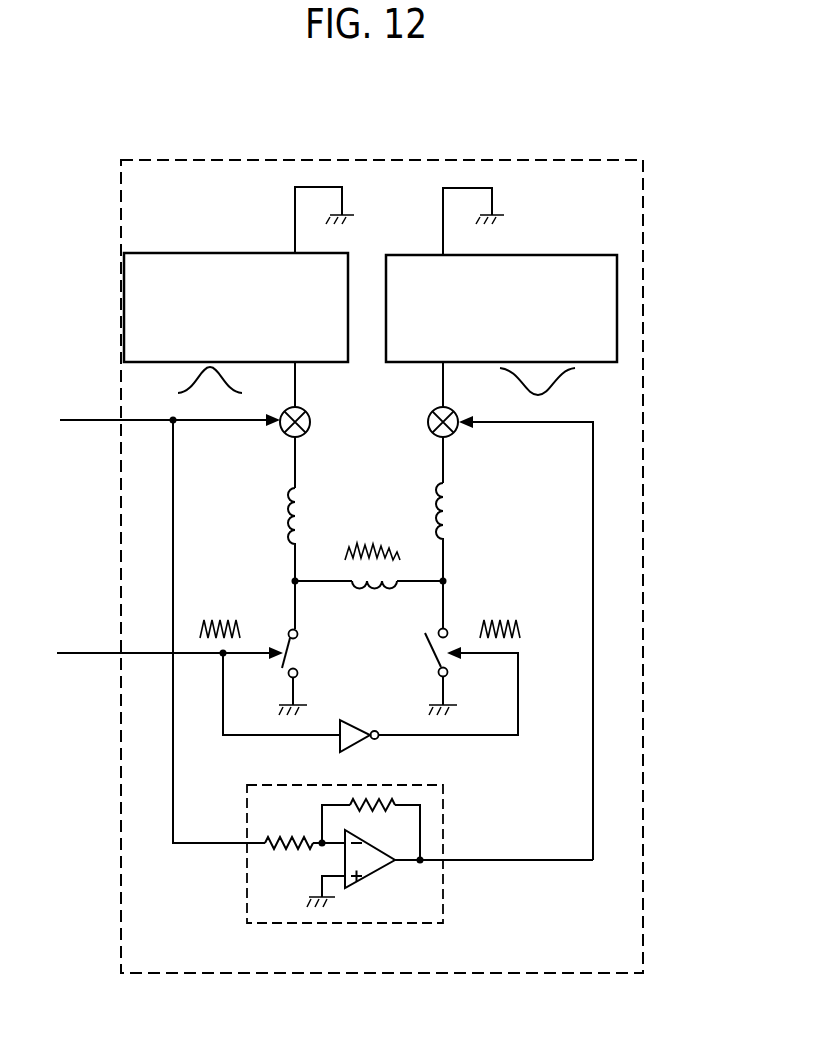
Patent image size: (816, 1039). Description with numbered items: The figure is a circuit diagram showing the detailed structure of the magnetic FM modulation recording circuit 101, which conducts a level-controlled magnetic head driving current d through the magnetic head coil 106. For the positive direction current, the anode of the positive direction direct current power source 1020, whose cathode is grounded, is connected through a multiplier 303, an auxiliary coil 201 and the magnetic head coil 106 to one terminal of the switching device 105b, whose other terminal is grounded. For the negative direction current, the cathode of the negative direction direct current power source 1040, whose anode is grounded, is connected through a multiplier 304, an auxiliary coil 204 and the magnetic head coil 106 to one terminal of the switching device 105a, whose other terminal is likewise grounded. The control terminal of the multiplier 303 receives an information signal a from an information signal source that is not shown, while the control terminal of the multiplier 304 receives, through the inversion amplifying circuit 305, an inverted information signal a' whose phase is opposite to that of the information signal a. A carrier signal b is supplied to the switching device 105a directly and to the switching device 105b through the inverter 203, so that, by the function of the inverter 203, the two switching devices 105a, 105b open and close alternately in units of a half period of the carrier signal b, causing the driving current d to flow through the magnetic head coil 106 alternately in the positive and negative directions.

The magnetic FM modulation recording circuit 101 is at (478, 158).
The positive direction direct current power source 1020 is at (208, 252).
The negative direction direct current power source 1040 is at (398, 255).
The multiplier 303 is at (312, 418).
The multiplier 304 is at (427, 428).
The auxiliary coil 201 is at (290, 518).
The auxiliary coil 204 is at (452, 505).
The magnetic head coil 106 is at (364, 586).
The switching device 105a is at (289, 632).
The switching device 105b is at (451, 648).
The inverter 203 is at (355, 720).
The inversion amplifying circuit 305 is at (443, 820).
The information signal a is at (170, 385).
The inverted information signal a' is at (573, 638).
The carrier signal b is at (80, 652).
The magnetic head driving current d is at (327, 579).